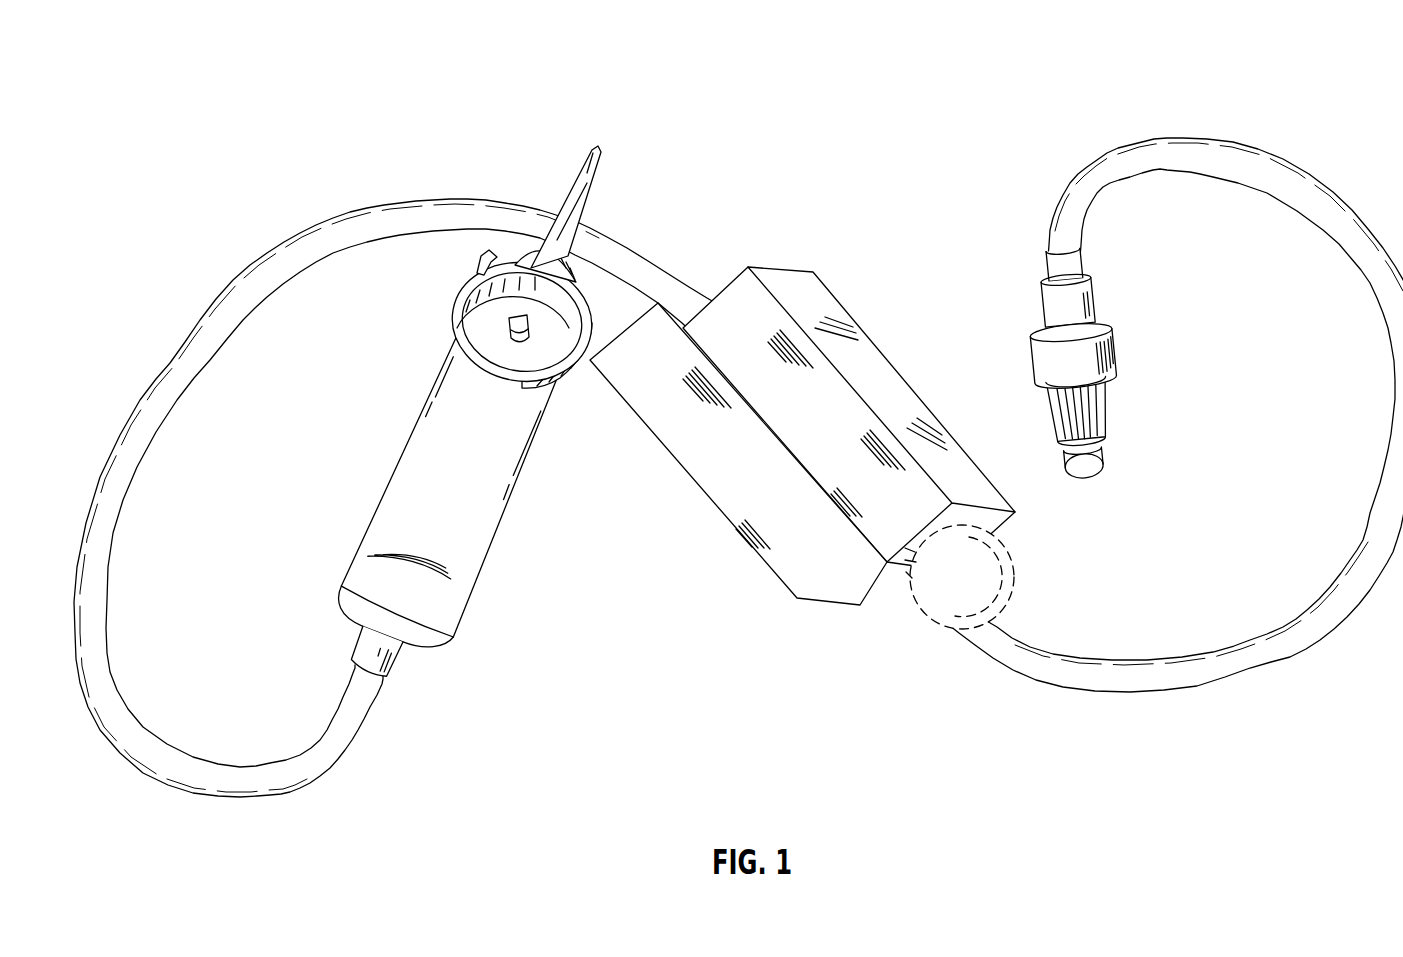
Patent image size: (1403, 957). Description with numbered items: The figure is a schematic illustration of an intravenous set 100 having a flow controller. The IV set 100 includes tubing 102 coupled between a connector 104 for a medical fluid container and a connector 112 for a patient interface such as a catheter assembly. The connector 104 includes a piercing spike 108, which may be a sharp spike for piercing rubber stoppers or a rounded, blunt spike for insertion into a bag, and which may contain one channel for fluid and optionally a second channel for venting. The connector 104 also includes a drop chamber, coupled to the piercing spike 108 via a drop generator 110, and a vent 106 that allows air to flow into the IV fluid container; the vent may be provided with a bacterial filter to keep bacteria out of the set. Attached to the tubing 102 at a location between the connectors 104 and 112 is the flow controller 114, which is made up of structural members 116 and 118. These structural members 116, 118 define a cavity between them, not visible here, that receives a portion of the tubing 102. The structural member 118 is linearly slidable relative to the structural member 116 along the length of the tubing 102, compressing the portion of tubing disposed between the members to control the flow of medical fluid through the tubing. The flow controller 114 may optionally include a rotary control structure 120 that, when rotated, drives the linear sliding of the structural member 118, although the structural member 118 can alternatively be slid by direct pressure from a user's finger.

The IV set 100 is at (738, 420).
The tubing 102 is at (248, 282).
The connector 104 is at (485, 550).
The vent 106 is at (477, 267).
The piercing spike 108 is at (573, 183).
The drop generator 110 is at (497, 343).
The connector 112 is at (1030, 361).
The flow controller 114 is at (802, 460).
The structural member 116 is at (783, 567).
The structural member 118 is at (753, 288).
The rotary control structure 120 is at (988, 582).